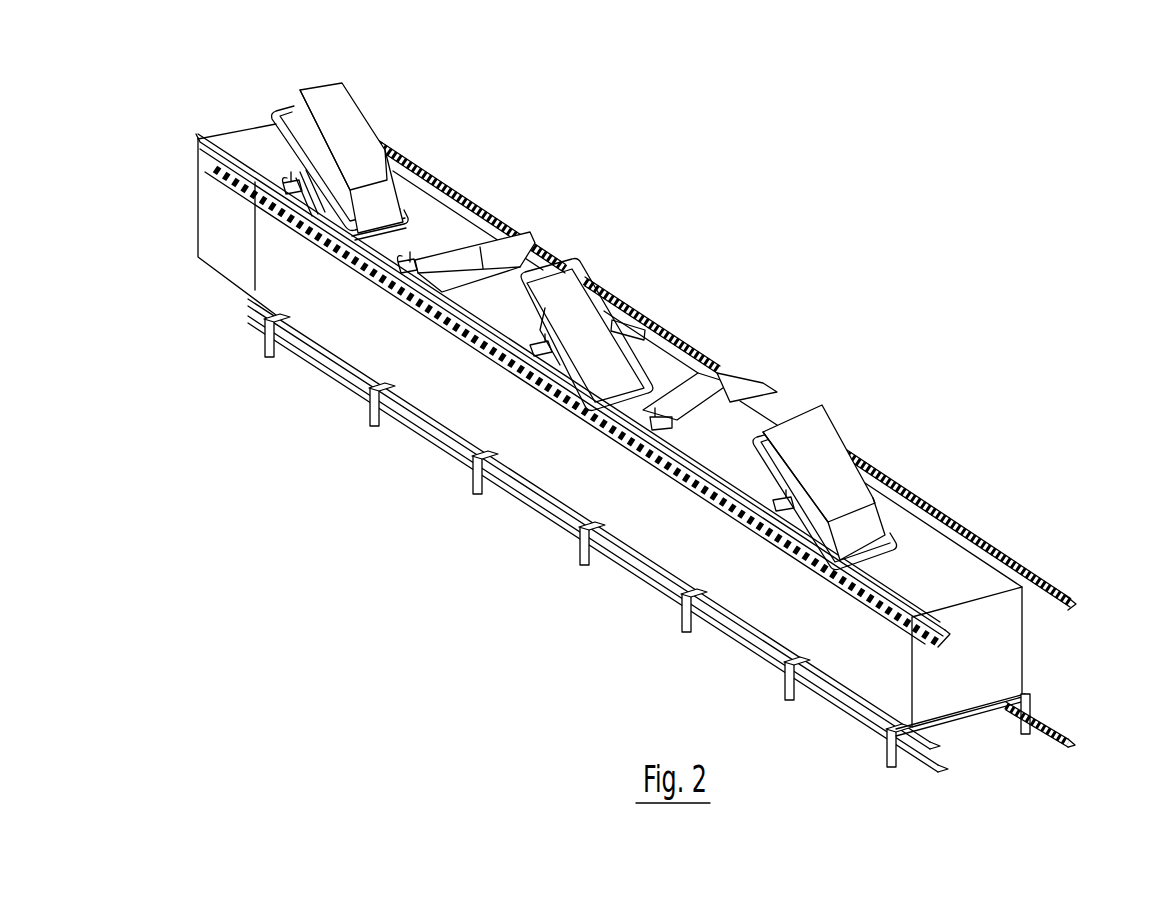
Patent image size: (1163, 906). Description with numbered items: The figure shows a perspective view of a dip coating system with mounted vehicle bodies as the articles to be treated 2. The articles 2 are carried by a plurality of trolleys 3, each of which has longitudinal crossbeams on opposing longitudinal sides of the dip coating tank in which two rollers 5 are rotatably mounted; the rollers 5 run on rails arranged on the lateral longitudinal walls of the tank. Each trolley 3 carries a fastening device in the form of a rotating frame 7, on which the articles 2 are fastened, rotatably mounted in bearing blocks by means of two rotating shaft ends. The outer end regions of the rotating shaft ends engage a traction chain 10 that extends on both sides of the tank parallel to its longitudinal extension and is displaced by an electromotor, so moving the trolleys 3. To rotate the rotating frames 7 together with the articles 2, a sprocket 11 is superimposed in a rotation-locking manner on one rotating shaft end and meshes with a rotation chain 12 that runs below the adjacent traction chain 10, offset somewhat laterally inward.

The articles to be treated 2 is at (345, 135).
The trolley 3 is at (576, 318).
The roller 5 is at (692, 322).
The rotating frame 7 is at (470, 217).
The traction chain 10 is at (372, 258).
The sprocket 11 is at (407, 258).
The rotation chain 12 is at (565, 415).